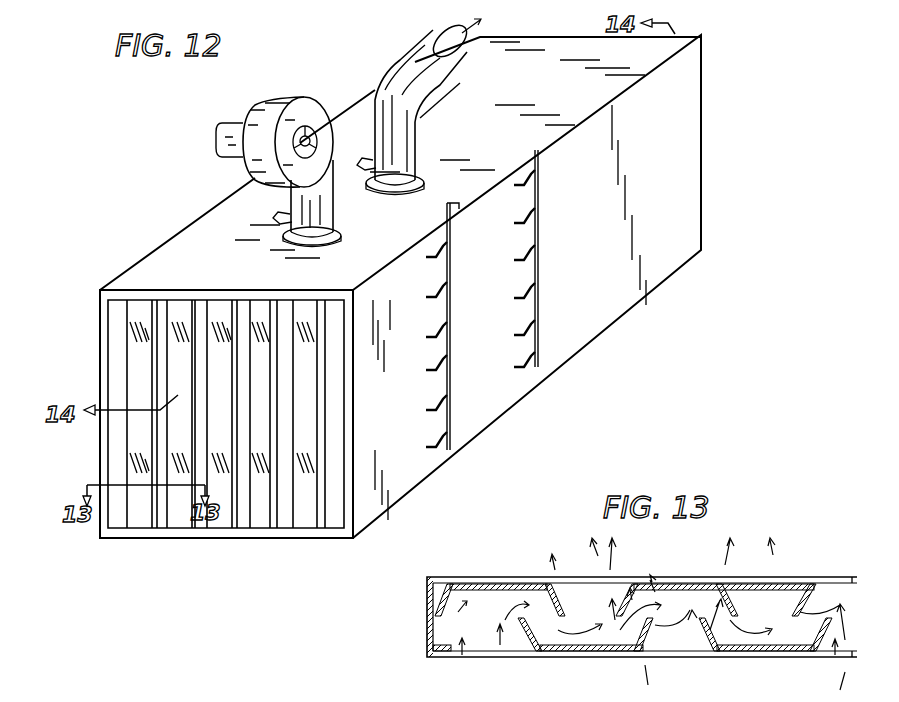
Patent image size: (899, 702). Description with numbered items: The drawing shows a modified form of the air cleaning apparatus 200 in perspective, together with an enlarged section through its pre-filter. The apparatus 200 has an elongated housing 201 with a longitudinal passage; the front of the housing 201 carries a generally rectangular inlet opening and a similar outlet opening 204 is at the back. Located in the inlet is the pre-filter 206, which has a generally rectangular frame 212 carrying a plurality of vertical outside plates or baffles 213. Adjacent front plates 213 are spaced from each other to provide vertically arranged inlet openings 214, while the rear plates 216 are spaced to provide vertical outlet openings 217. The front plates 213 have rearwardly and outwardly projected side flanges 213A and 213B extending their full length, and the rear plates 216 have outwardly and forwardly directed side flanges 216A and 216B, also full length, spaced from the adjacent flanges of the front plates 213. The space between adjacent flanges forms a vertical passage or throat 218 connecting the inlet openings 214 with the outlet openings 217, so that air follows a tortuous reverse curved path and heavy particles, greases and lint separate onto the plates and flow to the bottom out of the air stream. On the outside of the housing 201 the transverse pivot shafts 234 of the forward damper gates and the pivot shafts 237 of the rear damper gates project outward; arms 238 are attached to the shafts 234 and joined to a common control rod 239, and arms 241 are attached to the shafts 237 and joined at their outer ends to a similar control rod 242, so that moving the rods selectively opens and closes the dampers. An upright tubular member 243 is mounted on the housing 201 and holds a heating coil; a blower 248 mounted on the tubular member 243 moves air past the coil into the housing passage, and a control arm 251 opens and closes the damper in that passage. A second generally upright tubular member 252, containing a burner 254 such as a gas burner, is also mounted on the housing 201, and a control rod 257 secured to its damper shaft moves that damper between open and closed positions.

In FIG. 12, the air cleaning apparatus 200 is at (167, 234).
In FIG. 12, the elongated housing 201 is at (644, 269).
In FIG. 12, the outlet opening 204 is at (702, 127).
In FIG. 12, the pre-filter 206 is at (125, 453).
In FIG. 12, the frame 212 is at (103, 346).
In FIG. 13, the frame 212 is at (428, 630).
In FIG. 12, the front plates 213 is at (140, 305).
In FIG. 13, the front plates 213 is at (580, 652).
In FIG. 13, the side flange 213A is at (530, 630).
In FIG. 13, the side flange 213B is at (648, 640).
In FIG. 12, the inlet openings 214 is at (165, 528).
In FIG. 13, the inlet openings 214 is at (690, 640).
In FIG. 13, the rear plates 216 is at (512, 580).
In FIG. 13, the side flange 216A is at (440, 597).
In FIG. 13, the side flange 216B is at (552, 590).
In FIG. 13, the outlet openings 217 is at (765, 592).
In FIG. 13, the throat 218 is at (538, 620).
In FIG. 12, the pivot shaft 234 is at (432, 330).
In FIG. 12, the pivot shaft 237 is at (530, 226).
In FIG. 12, the arms 238 is at (445, 282).
In FIG. 12, the control rod 239 is at (452, 304).
In FIG. 12, the arms 241 is at (540, 207).
In FIG. 12, the control rod 242 is at (540, 262).
In FIG. 12, the upright tubular member 243 is at (325, 208).
In FIG. 12, the blower 248 is at (262, 112).
In FIG. 12, the control arm 251 is at (276, 218).
In FIG. 12, the second upright tubular member 252 is at (401, 142).
In FIG. 12, the burner 254 is at (432, 100).
In FIG. 12, the control rod 257 is at (360, 162).